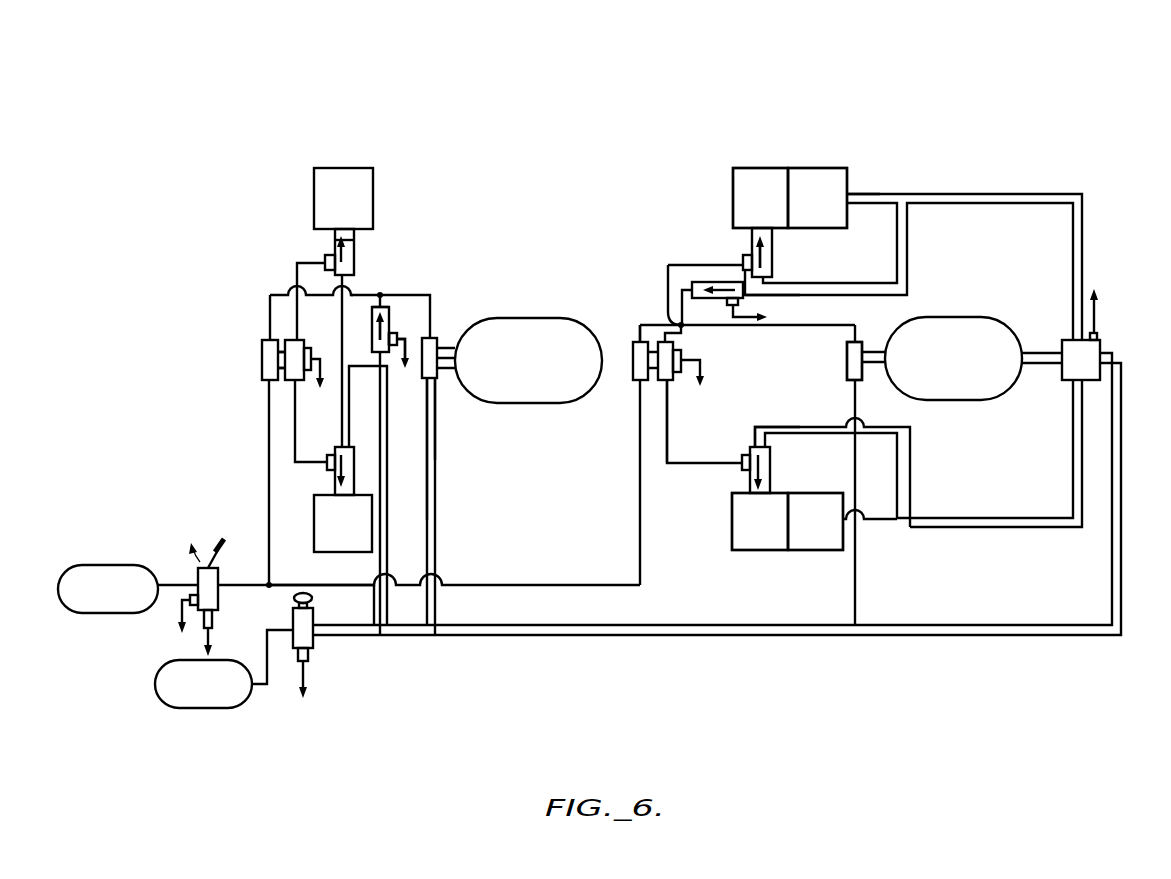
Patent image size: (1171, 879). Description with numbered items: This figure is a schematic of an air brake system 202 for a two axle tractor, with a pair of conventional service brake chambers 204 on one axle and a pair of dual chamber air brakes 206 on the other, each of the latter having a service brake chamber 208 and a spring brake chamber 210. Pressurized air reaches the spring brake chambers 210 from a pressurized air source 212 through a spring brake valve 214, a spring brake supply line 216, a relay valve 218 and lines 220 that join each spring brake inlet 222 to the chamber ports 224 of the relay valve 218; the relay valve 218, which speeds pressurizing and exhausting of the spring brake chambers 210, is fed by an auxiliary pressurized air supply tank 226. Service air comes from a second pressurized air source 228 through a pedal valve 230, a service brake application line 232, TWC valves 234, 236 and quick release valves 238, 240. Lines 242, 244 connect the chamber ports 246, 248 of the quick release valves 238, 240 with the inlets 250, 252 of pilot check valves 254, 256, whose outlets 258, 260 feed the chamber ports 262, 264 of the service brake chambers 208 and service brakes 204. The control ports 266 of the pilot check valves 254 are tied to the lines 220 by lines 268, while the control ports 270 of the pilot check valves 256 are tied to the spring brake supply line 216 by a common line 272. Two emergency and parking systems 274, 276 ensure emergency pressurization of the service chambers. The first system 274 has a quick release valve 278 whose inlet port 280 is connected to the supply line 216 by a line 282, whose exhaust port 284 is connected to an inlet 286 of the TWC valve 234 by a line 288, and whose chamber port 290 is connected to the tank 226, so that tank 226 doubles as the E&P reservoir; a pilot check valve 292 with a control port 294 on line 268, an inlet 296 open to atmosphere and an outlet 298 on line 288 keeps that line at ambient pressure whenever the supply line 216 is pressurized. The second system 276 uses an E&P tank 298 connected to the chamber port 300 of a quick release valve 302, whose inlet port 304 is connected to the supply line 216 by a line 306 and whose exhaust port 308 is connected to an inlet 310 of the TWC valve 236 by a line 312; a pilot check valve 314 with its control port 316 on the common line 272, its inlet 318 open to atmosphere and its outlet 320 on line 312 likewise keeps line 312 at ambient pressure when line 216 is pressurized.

The air brake system 202 is at (1055, 112).
The service brake chambers 204 is at (347, 168).
The dual chamber air brakes 206 is at (793, 162).
The service brake chamber 208 is at (755, 172).
The spring brake chamber 210 is at (820, 178).
The pressurized air source 212 is at (155, 684).
The spring brake valve 214 is at (293, 620).
The spring brake supply line 216 is at (453, 625).
The relay valve 218 is at (1056, 379).
The lines 220 is at (988, 194).
The spring brake inlet 222 is at (855, 194).
The chamber ports 224 is at (1072, 340).
The auxiliary pressurized air supply tank 226 is at (967, 318).
The pressurized air source 228 is at (98, 565).
The pedal valve 230 is at (220, 548).
The service brake application line 232 is at (608, 587).
The TWC valve 234 is at (638, 390).
The TWC valve 236 is at (262, 360).
The quick release valve 238 is at (676, 380).
The quick release valve 240 is at (292, 340).
The line 242 is at (670, 268).
The line 244 is at (297, 268).
The chamber port 246 is at (672, 338).
The chamber port 248 is at (302, 289).
The inlet 250 is at (745, 255).
The inlet 252 is at (325, 262).
The pilot check valve 254 is at (773, 258).
The pilot check valve 256 is at (355, 266).
The outlet 258 is at (773, 243).
The outlet 260 is at (356, 245).
The chamber ports 262 is at (758, 232).
The chamber ports 264 is at (350, 238).
The control ports 266 is at (765, 292).
The lines 268 is at (908, 245).
The control ports 270 is at (346, 285).
The common line 272 is at (372, 609).
The emergency and parking air supply system 274 is at (616, 496).
The emergency and parking air supply system 276 is at (450, 516).
The quick release valve 278 is at (847, 360).
The inlet port 280 is at (854, 392).
The line 282 is at (858, 598).
The exhaust port 284 is at (850, 342).
The inlet 286 is at (638, 330).
The line 288 is at (833, 325).
The chamber port 290 is at (888, 333).
The pilot check valve 292 is at (672, 265).
The control port 294 is at (743, 282).
The inlet 296 is at (745, 303).
The outlet / E&P tank 298 is at (540, 404).
The chamber port 300 is at (438, 345).
The quick release valve 302 is at (436, 395).
The inlet port 304 is at (429, 405).
The line 306 is at (436, 463).
The exhaust port 308 is at (430, 322).
The inlet 310 is at (281, 350).
The line 312 is at (383, 305).
The pilot check valve 314 is at (386, 326).
The control port 316 is at (388, 362).
The inlet 318 is at (406, 350).
The outlet 320 is at (396, 336).